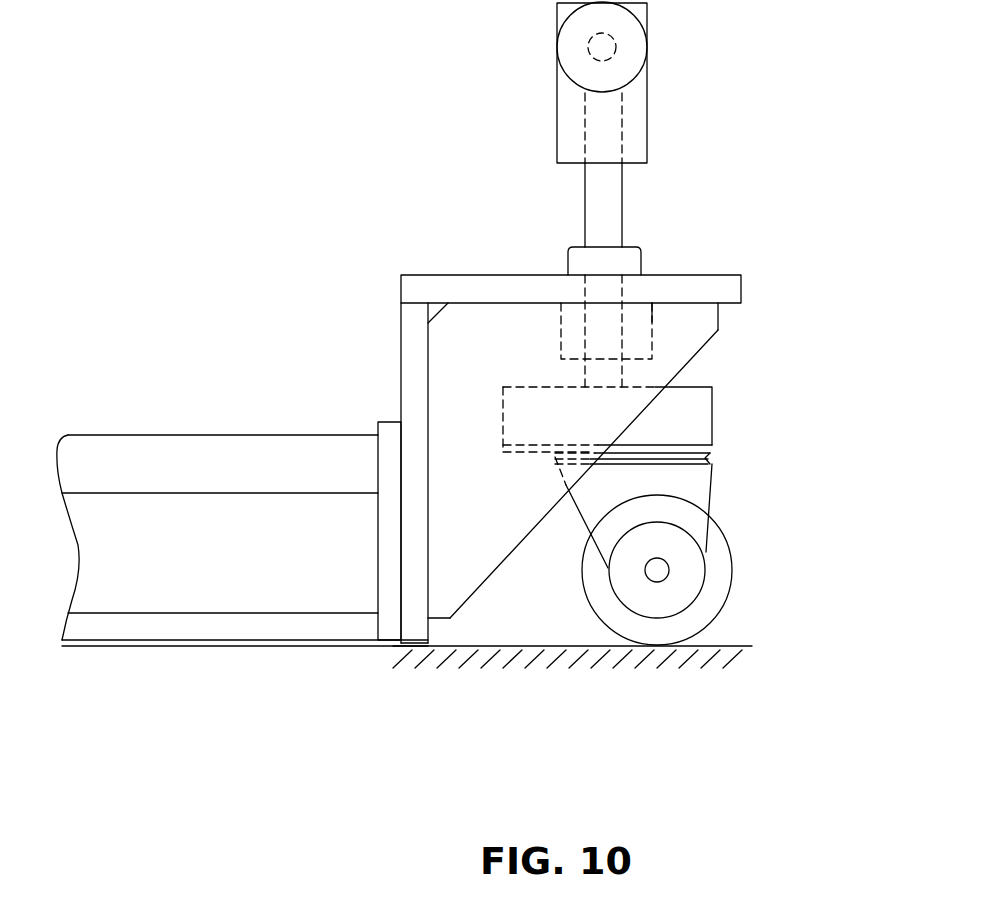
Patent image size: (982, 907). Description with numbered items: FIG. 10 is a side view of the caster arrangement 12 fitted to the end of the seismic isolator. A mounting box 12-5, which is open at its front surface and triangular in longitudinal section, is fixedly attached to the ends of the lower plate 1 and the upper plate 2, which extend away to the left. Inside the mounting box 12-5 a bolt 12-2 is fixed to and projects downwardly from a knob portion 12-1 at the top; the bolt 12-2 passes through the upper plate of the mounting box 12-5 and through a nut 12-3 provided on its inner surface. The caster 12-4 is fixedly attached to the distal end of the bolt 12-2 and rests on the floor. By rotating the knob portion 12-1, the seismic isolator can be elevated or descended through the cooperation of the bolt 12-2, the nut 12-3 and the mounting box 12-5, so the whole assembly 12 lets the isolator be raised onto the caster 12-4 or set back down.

The lower plate 1 is at (222, 623).
The upper plate 2 is at (208, 450).
The caster assembly 12 is at (893, 202).
The knob portion 12-1 is at (640, 112).
The bolt 12-2 is at (610, 205).
The nut 12-3 is at (645, 335).
The caster 12-4 is at (695, 490).
The mounting box 12-5 is at (693, 287).